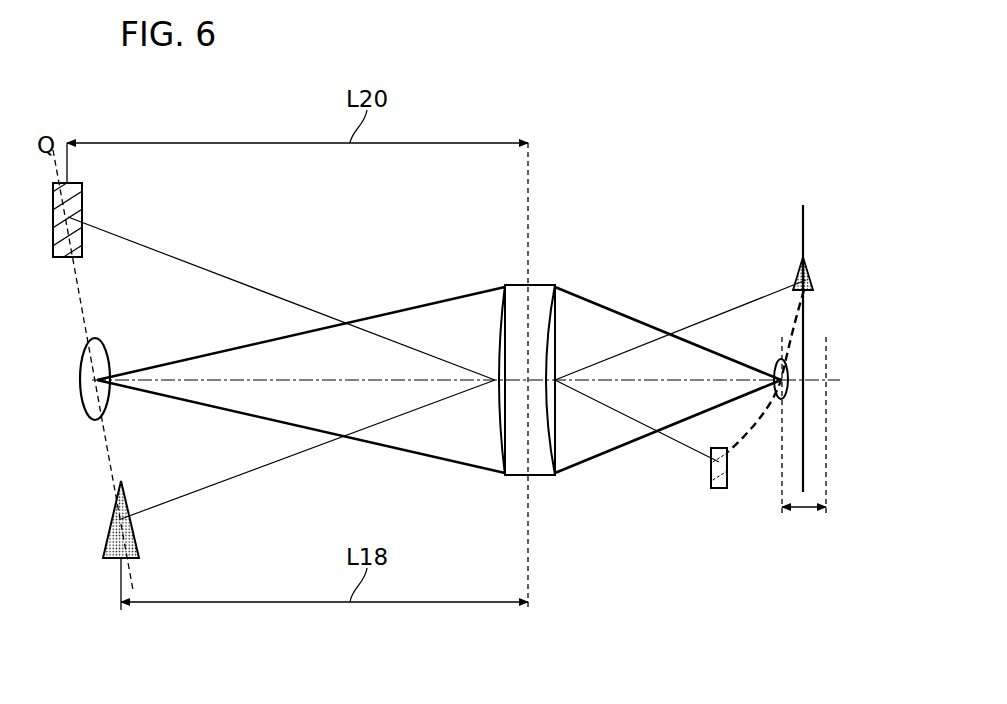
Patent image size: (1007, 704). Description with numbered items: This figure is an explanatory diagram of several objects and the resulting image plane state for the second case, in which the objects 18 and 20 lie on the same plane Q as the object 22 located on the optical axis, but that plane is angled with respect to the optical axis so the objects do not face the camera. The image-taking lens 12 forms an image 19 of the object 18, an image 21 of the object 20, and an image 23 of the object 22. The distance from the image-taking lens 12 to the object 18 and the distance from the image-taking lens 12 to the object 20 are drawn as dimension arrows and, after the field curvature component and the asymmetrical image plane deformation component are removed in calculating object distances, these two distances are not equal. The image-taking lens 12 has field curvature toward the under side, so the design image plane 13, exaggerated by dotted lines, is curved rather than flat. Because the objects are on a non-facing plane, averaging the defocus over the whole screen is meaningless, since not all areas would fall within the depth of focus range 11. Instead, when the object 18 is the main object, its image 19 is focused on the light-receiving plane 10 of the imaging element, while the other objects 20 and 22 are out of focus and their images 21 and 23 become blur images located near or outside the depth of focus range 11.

The light-receiving plane 10 is at (805, 212).
The depth of focus range 11 is at (808, 512).
The image-taking lens 12 is at (540, 285).
The design image plane 13 is at (762, 424).
The object 18 is at (138, 543).
The image 19 is at (812, 278).
The object 20 is at (84, 208).
The image 21 is at (718, 490).
The object 22 is at (90, 420).
The image 23 is at (786, 373).